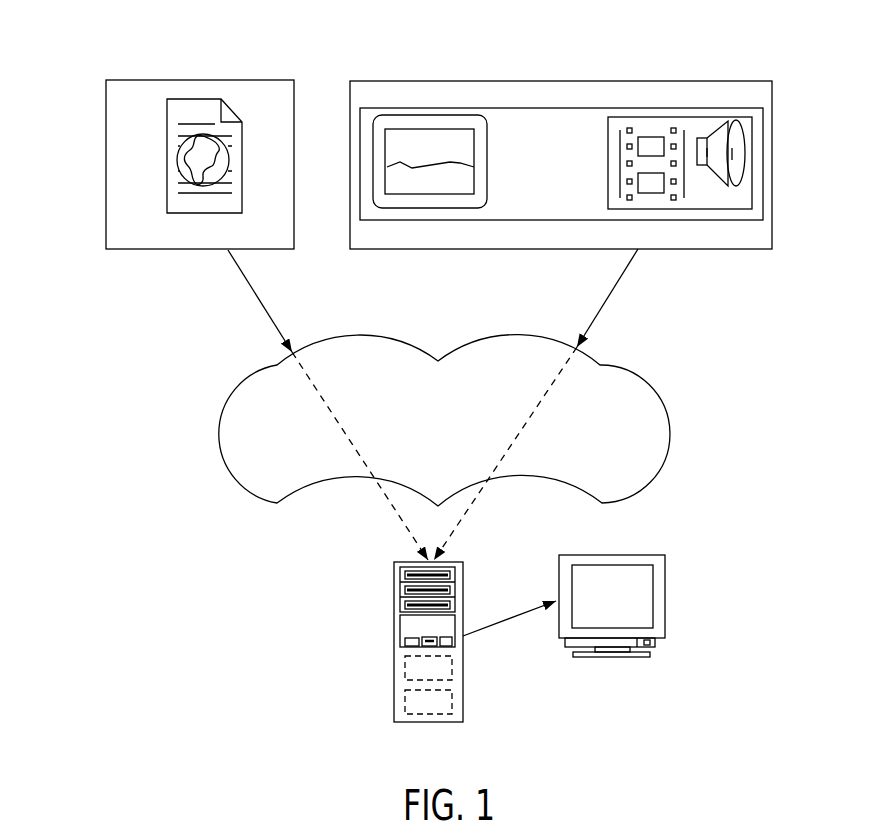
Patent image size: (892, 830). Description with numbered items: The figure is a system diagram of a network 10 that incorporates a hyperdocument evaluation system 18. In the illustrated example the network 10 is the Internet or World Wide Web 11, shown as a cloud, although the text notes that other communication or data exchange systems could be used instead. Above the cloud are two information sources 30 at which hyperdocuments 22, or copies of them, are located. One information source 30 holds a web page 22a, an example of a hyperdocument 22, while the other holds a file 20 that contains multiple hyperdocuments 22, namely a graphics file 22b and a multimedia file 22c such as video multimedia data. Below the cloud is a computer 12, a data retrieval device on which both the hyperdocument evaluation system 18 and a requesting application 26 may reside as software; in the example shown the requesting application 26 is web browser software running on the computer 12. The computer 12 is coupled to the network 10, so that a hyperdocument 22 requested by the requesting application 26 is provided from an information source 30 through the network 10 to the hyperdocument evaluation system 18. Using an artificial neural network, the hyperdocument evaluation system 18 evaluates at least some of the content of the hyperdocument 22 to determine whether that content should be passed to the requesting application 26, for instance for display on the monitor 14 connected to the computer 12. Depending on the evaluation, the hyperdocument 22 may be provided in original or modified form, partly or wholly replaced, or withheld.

The network 10 is at (218, 456).
The Internet or World Wide Web 11 is at (650, 385).
The computer 12 is at (424, 665).
The monitor 14 is at (667, 625).
The hyperdocument evaluation system 18 is at (444, 702).
The file 20 is at (530, 107).
The hyperdocument 22 is at (388, 119).
The web page 22a is at (167, 178).
The graphics file 22b is at (478, 113).
The multimedia file 22c is at (608, 117).
The requesting application 26 is at (444, 659).
The information source 30 is at (220, 80).